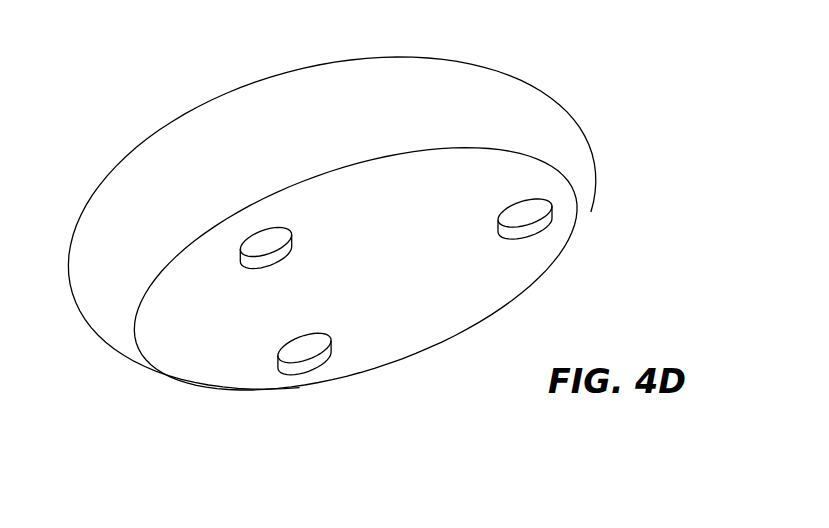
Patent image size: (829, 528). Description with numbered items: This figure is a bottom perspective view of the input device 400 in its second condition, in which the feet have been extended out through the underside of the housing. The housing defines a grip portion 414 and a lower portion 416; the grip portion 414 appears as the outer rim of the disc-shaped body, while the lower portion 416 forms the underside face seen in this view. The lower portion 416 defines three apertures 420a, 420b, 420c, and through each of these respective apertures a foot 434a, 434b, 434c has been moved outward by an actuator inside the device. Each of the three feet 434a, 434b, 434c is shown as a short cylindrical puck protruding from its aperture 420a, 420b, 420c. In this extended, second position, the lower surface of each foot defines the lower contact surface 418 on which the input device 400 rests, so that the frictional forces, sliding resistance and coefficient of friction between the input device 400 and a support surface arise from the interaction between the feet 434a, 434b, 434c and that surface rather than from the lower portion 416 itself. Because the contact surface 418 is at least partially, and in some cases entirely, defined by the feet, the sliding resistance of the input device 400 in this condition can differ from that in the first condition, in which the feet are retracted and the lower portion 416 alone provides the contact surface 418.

The input device 400 is at (105, 138).
The grip portion 414 is at (530, 84).
The lower portion 416 is at (452, 323).
The lower contact surface 418 is at (426, 311).
The aperture 420a is at (233, 252).
The aperture 420b is at (327, 330).
The aperture 420c is at (493, 227).
The foot 434a is at (251, 239).
The foot 434b is at (290, 350).
The foot 434c is at (512, 212).